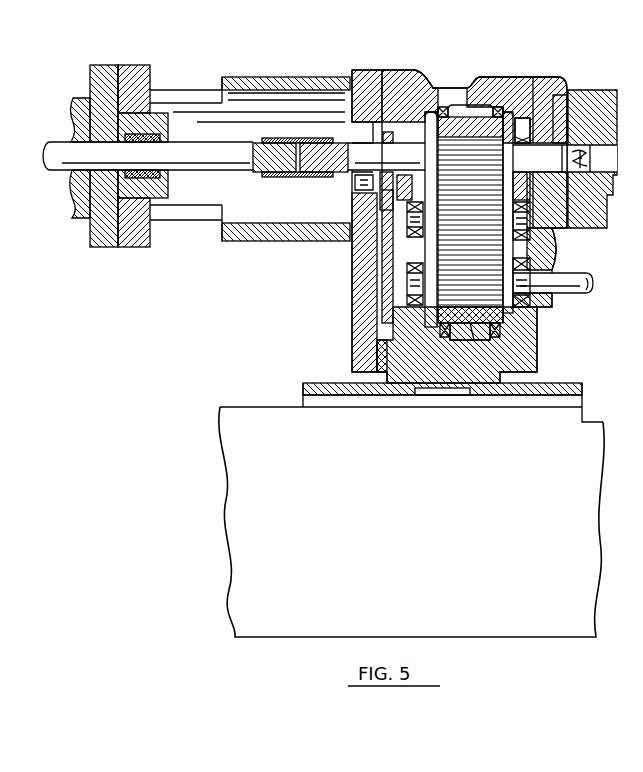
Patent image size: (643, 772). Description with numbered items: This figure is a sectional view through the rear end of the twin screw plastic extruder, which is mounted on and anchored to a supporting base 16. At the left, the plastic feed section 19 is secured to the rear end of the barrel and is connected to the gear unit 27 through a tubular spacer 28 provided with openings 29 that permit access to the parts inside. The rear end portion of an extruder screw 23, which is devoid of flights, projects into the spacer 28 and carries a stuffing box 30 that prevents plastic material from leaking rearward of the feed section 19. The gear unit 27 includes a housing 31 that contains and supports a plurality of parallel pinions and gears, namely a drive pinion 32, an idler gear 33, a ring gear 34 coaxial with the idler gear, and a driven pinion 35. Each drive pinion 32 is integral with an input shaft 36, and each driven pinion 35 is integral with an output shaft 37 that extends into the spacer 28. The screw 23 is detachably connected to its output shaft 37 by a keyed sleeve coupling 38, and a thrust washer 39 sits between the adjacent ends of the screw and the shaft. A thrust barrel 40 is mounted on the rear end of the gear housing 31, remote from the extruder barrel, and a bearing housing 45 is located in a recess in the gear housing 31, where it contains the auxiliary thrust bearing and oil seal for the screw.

The supporting base 16 is at (253, 484).
The plastic feed section 19 is at (88, 80).
The screw 23 is at (70, 157).
The gear unit 27 is at (405, 76).
The tubular spacer 28 is at (278, 79).
The opening 29 is at (173, 96).
The stuffing box 30 is at (163, 185).
The housing 31 is at (492, 74).
The drive pinion 32 is at (480, 287).
The idler gear 33 is at (557, 245).
The ring gear 34 is at (537, 348).
The driven pinion 35 is at (555, 122).
The input shaft 36 is at (576, 287).
The output shaft 37 is at (370, 157).
The keyed sleeve coupling 38 is at (258, 177).
The thrust washer 39 is at (297, 177).
The thrust barrel 40 is at (618, 105).
The bearing housing 45 is at (560, 85).